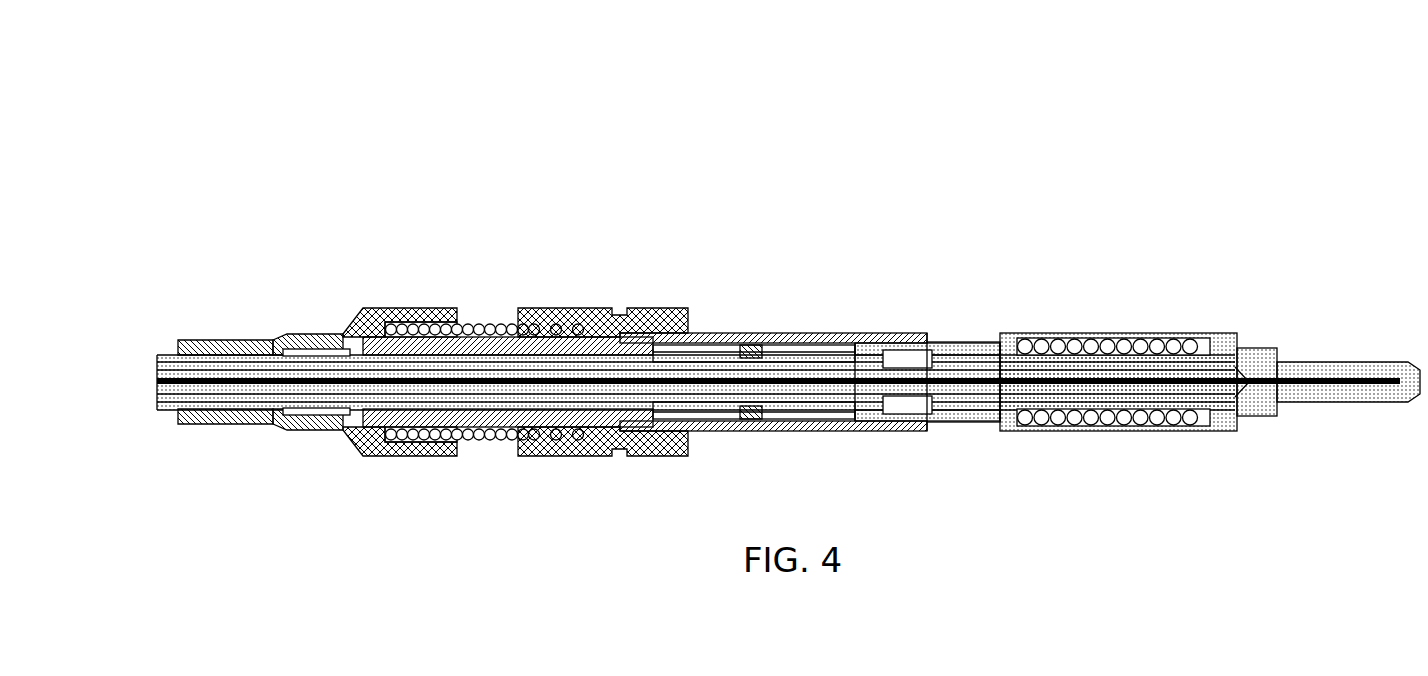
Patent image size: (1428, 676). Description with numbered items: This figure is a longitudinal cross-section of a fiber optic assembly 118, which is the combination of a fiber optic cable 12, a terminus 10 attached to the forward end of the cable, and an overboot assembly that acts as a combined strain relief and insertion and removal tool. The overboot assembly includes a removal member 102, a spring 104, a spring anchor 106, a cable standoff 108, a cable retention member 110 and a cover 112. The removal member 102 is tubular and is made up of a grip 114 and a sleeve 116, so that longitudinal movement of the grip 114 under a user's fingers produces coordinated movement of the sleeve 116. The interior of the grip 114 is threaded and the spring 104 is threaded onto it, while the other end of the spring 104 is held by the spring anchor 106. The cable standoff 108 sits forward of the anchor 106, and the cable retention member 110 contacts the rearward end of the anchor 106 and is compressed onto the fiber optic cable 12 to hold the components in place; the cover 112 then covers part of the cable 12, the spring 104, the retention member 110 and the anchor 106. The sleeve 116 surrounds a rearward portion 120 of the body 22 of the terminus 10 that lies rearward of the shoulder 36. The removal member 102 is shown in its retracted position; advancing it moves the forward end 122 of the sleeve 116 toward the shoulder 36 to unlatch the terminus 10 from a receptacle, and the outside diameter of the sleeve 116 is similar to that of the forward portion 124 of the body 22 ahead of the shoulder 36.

The terminus 10 is at (1008, 235).
The fiber optic cable 12 is at (165, 347).
The body 22 is at (1142, 333).
The shoulder 36 is at (1000, 337).
The removal member 102 is at (425, 212).
The spring 104 is at (502, 328).
The spring anchor 106 is at (382, 327).
The cable standoff 108 is at (488, 330).
The cable retention member 110 is at (347, 340).
The cover 112 is at (273, 337).
The grip 114 is at (657, 312).
The sleeve 116 is at (750, 332).
The fiber optic assembly 118 is at (776, 148).
The rearward portion 120 is at (978, 428).
The forward end 122 is at (932, 435).
The forward portion 124 is at (1098, 432).